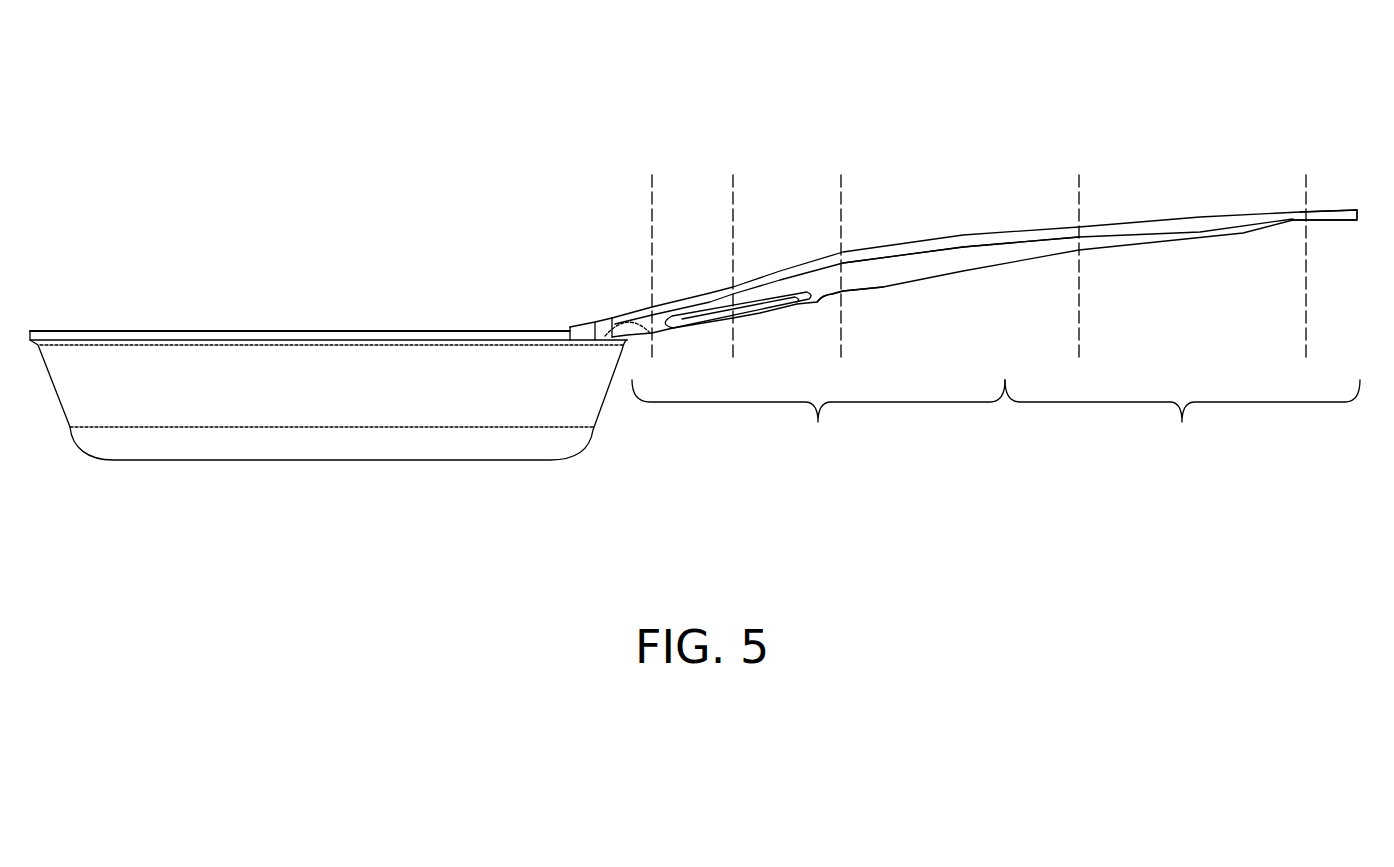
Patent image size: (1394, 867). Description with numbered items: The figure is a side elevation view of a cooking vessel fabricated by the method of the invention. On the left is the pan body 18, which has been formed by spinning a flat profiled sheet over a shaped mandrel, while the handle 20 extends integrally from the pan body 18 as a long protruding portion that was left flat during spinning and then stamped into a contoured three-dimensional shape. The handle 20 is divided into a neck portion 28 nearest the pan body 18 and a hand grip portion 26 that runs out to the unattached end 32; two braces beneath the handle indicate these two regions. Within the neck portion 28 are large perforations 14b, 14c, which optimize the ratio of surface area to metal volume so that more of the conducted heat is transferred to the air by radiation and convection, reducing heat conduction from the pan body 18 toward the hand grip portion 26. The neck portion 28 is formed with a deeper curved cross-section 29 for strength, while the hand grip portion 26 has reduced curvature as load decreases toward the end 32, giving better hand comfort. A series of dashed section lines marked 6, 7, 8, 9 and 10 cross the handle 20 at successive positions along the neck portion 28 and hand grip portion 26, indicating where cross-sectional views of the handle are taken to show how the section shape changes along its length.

The pan body 18 is at (277, 405).
The handle 20 is at (1215, 210).
The perforation 14b is at (760, 307).
The perforation 14c is at (855, 293).
The deeper curved cross-section 29 is at (947, 258).
The unattached end 32 is at (1357, 212).
The neck portion 28 is at (818, 417).
The hand grip portion 26 is at (1182, 417).
The section line 6- 6 is at (666, 356).
The section line 7- 7 is at (747, 356).
The section line 8- 8 is at (855, 356).
The section line 9- 9 is at (1093, 356).
The section line 10- 10 is at (1320, 356).